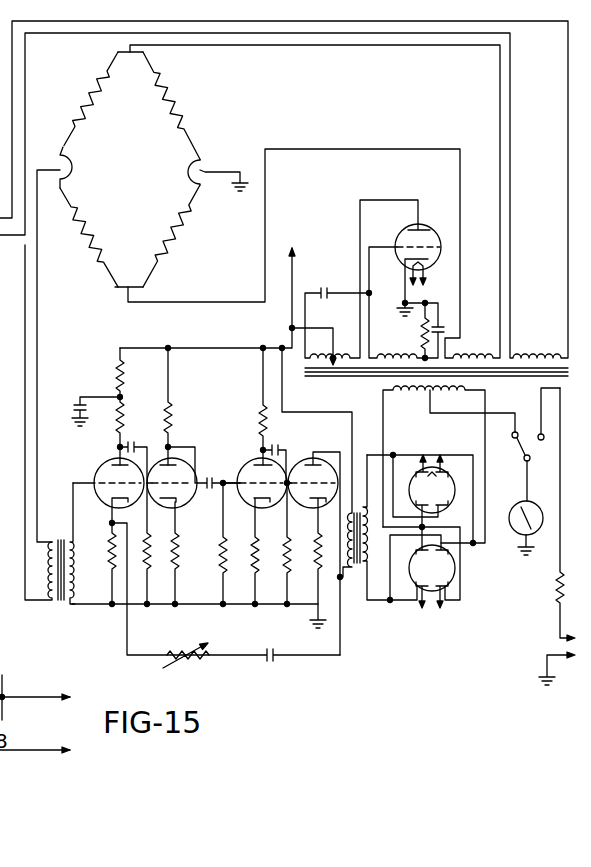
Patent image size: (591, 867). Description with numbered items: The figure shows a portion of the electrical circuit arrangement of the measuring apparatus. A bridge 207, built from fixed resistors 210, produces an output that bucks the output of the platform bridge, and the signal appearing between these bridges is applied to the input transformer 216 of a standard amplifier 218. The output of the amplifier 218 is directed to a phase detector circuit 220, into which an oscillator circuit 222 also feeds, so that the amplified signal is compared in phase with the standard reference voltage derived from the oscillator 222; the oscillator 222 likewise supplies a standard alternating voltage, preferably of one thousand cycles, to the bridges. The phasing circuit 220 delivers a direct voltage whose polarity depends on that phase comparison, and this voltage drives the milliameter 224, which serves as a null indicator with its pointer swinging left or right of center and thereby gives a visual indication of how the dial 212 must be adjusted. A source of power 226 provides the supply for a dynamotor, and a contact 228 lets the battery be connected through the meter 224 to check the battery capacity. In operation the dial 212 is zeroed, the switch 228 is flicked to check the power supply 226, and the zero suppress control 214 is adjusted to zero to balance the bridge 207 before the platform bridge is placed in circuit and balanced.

The bridge 207 is at (158, 170).
The fixed resistors 210 is at (88, 107).
The dial 212 is at (240, 168).
The zero suppress control 214 is at (47, 332).
The input transformer 216 is at (50, 446).
The standard amplifier 218 is at (214, 423).
The phase detector circuit 220 is at (453, 448).
The oscillator circuit 222 is at (326, 208).
The milliameter 224 is at (516, 530).
The source of power 226 is at (556, 652).
The contact 228 is at (539, 434).